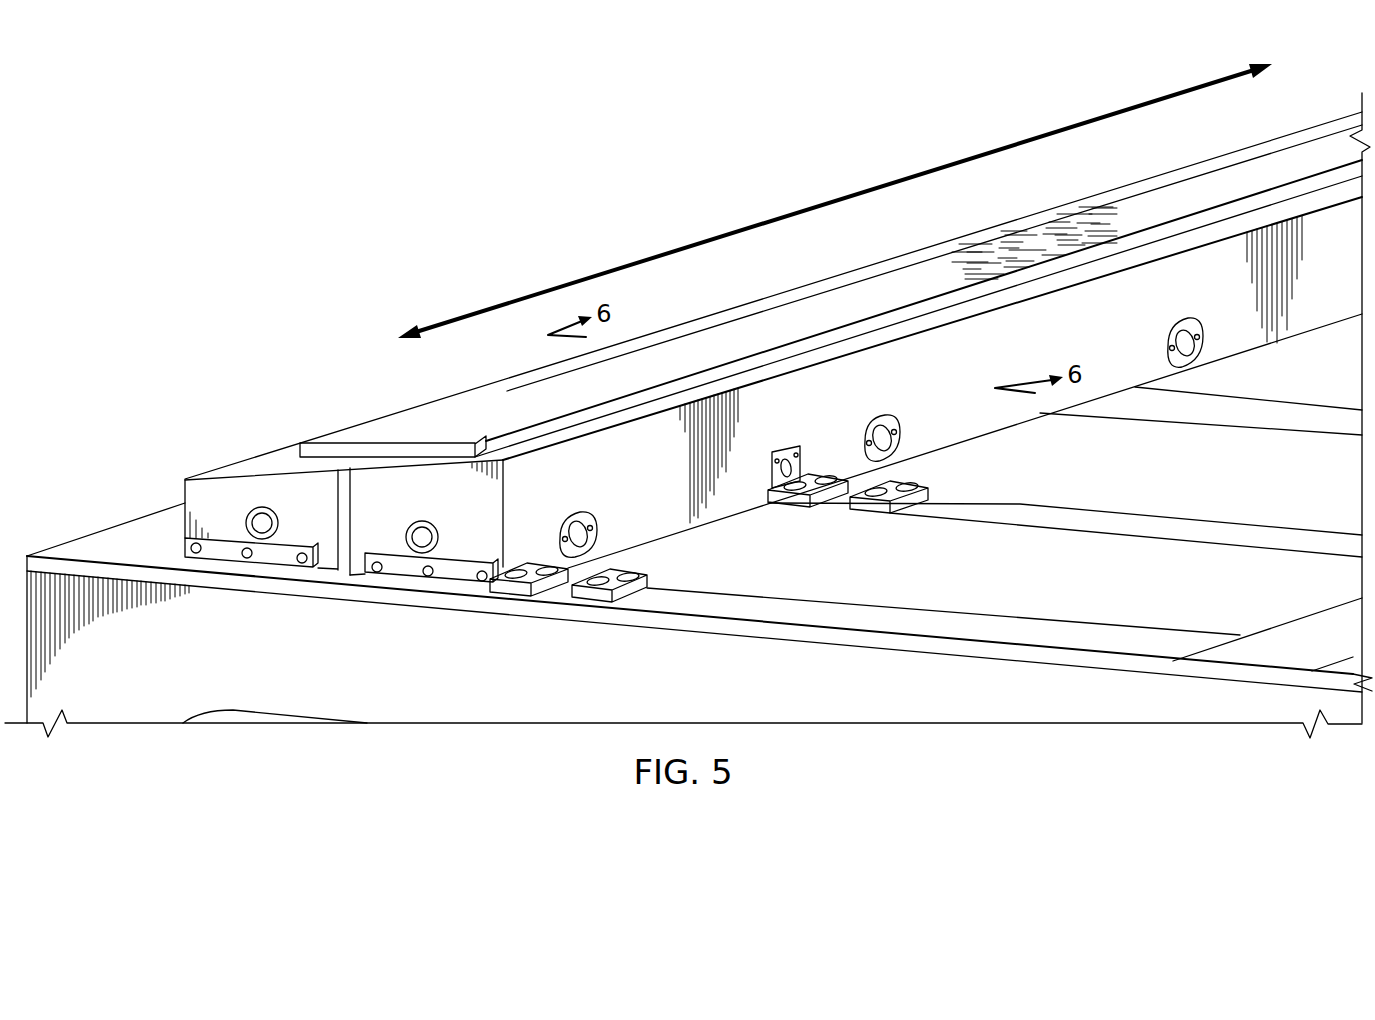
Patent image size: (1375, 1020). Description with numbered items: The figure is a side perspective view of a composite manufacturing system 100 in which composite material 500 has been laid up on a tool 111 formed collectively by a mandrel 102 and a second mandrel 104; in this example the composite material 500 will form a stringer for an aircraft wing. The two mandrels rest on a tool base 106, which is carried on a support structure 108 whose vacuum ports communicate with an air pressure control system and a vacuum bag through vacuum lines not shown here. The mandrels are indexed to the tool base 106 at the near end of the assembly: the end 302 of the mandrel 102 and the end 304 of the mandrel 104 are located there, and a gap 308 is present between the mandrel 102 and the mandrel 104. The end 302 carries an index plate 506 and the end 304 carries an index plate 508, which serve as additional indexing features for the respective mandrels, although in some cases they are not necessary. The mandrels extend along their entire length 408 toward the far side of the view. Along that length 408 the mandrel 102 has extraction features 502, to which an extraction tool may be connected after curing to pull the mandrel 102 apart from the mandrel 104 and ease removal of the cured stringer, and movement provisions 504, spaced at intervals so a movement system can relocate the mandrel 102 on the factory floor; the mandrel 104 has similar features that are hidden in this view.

The composite manufacturing system 100 is at (390, 229).
The mandrel 102 is at (665, 540).
The mandrel 104 is at (210, 466).
The tool base 106 is at (1305, 487).
The support structure 108 is at (68, 548).
The tool 111 is at (236, 405).
The end of mandrel 302 is at (480, 512).
The end of mandrel 304 is at (188, 492).
The gap 308 is at (338, 583).
The length 408 is at (646, 256).
The composite material 500 is at (360, 432).
The extraction features 502 is at (796, 466).
The movement provisions 504 is at (905, 430).
The index plate 506 is at (458, 578).
The index plate 508 is at (220, 555).